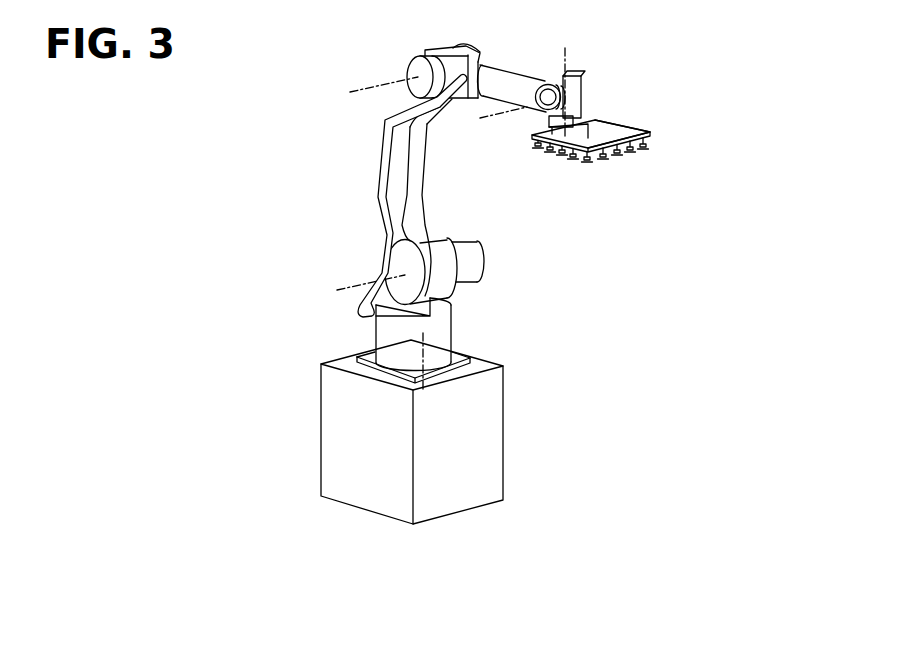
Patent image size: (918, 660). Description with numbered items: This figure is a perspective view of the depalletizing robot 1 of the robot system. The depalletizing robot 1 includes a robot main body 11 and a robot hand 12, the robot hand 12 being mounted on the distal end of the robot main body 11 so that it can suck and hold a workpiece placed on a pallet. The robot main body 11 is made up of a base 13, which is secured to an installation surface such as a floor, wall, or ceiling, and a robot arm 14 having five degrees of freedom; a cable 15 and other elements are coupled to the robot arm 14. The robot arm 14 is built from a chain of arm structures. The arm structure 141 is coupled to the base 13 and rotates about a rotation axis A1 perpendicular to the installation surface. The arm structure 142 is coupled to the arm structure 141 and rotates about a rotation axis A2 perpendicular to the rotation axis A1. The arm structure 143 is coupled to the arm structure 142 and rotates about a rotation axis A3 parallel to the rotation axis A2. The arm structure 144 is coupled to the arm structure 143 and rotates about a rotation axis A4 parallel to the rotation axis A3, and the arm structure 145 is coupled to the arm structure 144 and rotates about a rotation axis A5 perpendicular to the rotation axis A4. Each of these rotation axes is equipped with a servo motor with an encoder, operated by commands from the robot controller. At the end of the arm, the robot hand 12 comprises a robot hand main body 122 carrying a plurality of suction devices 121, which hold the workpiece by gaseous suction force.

The depalletizing robot 1 is at (676, 61).
The robot main body 11 is at (410, 195).
The robot hand 12 is at (622, 132).
The suction devices 121 is at (625, 158).
The robot hand main body 122 is at (650, 135).
The base 13 is at (487, 423).
The robot arm 14 is at (418, 213).
The arm structure 141 is at (448, 318).
The arm structure 142 is at (398, 162).
The arm structure 143 is at (500, 78).
The arm structure 144 is at (577, 108).
The arm structure 145 is at (578, 120).
The cable 15 is at (380, 187).
The rotation axis A1 is at (423, 340).
The rotation axis A2 is at (352, 285).
The rotation axis A3 is at (368, 85).
The rotation axis A4 is at (497, 122).
The rotation axis A5 is at (567, 52).